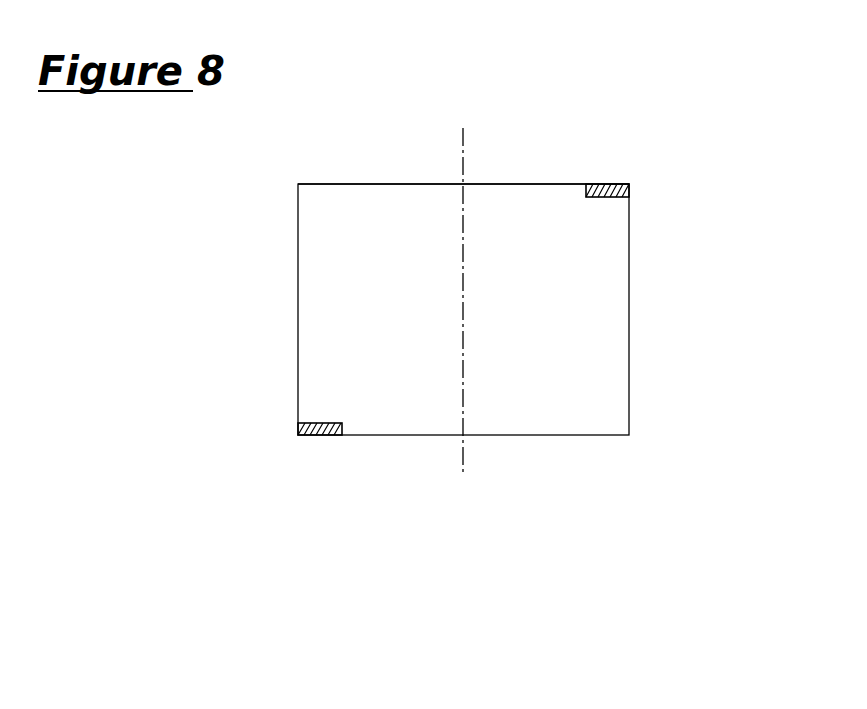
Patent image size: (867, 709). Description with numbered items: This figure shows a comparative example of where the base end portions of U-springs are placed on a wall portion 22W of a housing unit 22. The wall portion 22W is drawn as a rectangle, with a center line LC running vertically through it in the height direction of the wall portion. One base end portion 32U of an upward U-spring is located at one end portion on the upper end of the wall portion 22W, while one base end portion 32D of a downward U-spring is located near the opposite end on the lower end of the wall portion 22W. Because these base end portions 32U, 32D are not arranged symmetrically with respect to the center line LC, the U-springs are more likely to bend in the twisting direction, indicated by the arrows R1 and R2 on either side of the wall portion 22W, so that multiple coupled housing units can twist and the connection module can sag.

The housing unit 22 is at (571, 102).
The wall portion 22W is at (607, 322).
The center line LC is at (465, 150).
The base end portion of upward U-spring 32U is at (608, 184).
The base end portion of downward U-spring 32D is at (318, 435).
The twisting direction arrow R1 is at (381, 158).
The twisting direction arrow R2 is at (547, 462).